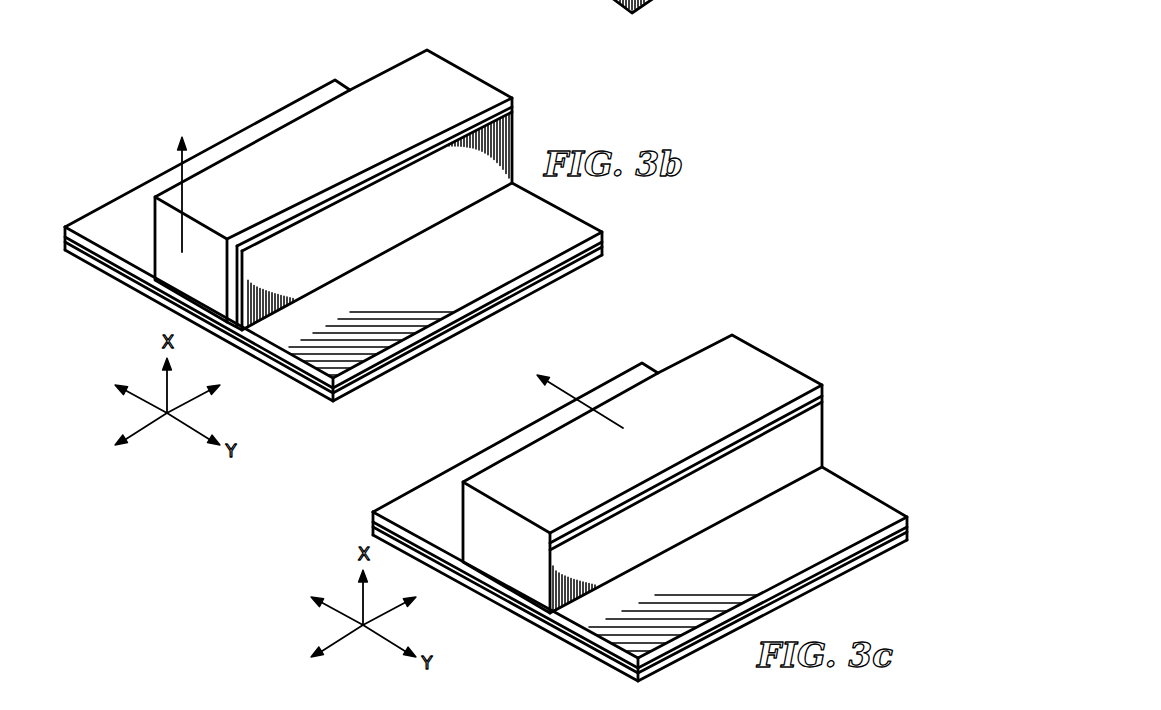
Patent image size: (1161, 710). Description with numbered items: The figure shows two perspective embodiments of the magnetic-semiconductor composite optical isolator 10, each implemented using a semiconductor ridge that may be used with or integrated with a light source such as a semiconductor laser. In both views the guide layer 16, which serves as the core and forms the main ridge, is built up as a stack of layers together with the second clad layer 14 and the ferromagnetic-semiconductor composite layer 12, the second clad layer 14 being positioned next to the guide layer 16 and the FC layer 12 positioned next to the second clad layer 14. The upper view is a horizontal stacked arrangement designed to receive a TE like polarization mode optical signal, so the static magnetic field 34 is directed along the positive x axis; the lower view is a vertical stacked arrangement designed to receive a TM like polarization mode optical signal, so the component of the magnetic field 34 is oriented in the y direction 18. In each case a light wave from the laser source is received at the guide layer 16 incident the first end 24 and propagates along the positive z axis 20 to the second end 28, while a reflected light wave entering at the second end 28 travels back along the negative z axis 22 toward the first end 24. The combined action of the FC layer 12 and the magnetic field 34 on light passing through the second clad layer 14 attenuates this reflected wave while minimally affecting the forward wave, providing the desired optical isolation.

In FIG. 3b, the magnetic-semiconductor composite optical isolator 10 is at (223, 68).
In FIG. 3c, the magnetic-semiconductor composite optical isolator 10 is at (852, 313).
In FIG. 3b, the ferromagnetic-semiconductor composite layer 12 is at (506, 97).
In FIG. 3c, the ferromagnetic-semiconductor composite layer 12 is at (790, 377).
In FIG. 3b, the second clad layer 14 is at (364, 168).
In FIG. 3c, the second clad layer 14 is at (825, 398).
In FIG. 3b, the guide layer 16 is at (381, 78).
In FIG. 3c, the guide layer 16 is at (822, 440).
In FIG. 3b, the positive y axis 18 is at (137, 398).
In FIG. 3c, the positive y axis 18 is at (333, 610).
In FIG. 3b, the positive z axis 20 is at (188, 401).
In FIG. 3c, the positive z axis 20 is at (384, 613).
In FIG. 3b, the negative z axis 22 is at (143, 428).
In FIG. 3c, the negative z axis 22 is at (339, 640).
In FIG. 3b, the first end 24 is at (162, 243).
In FIG. 3c, the first end 24 is at (473, 528).
In FIG. 3b, the second end 28 is at (450, 69).
In FIG. 3c, the second end 28 is at (753, 357).
In FIG. 3b, the static magnetic field 34 is at (180, 150).
In FIG. 3c, the static magnetic field 34 is at (568, 393).